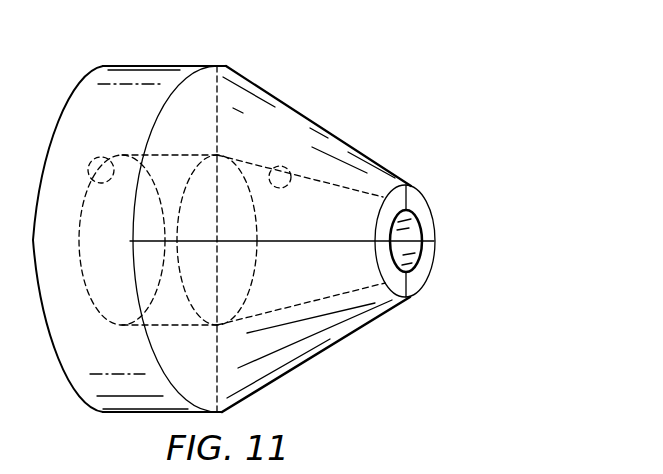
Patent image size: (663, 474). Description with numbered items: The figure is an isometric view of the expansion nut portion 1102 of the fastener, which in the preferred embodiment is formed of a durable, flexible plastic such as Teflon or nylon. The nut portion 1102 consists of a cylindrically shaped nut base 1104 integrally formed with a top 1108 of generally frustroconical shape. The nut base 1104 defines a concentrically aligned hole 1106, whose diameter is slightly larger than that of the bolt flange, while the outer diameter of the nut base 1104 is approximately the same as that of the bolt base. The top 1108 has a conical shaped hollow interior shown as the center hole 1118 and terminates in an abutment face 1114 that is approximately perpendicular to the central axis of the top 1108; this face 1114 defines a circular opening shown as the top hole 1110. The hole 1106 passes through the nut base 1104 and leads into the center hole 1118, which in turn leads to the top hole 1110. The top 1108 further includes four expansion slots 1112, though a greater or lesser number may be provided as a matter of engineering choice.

The nut portion 1102 is at (355, 82).
The nut base 1104 is at (148, 65).
The hole 1106 is at (108, 158).
The top 1108 is at (330, 348).
The top hole 1110 is at (415, 253).
The expansion slots 1112 is at (278, 242).
The abutment face 1114 is at (423, 208).
The center hole 1118 is at (271, 168).